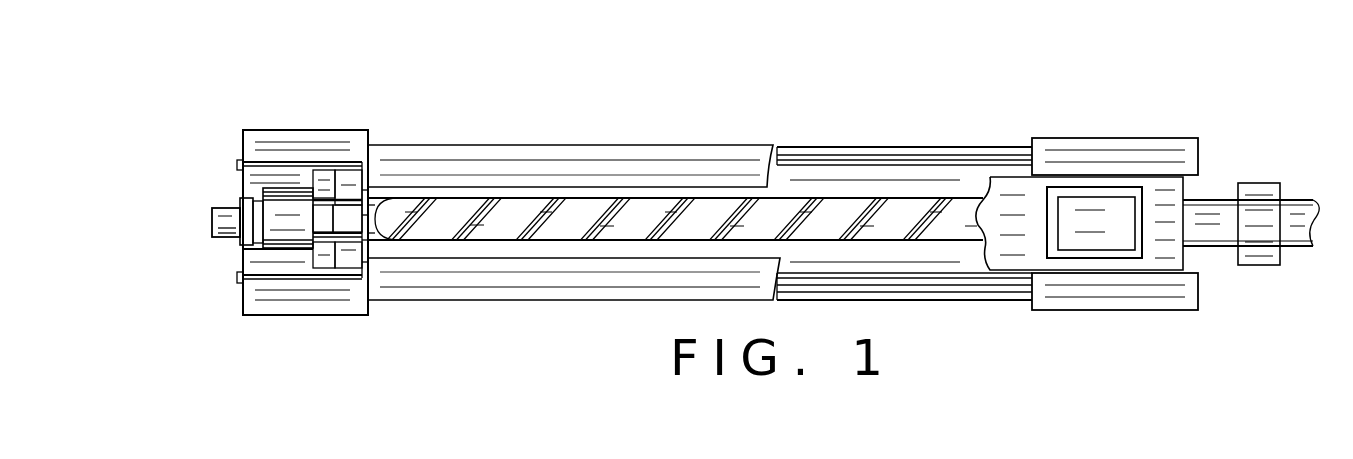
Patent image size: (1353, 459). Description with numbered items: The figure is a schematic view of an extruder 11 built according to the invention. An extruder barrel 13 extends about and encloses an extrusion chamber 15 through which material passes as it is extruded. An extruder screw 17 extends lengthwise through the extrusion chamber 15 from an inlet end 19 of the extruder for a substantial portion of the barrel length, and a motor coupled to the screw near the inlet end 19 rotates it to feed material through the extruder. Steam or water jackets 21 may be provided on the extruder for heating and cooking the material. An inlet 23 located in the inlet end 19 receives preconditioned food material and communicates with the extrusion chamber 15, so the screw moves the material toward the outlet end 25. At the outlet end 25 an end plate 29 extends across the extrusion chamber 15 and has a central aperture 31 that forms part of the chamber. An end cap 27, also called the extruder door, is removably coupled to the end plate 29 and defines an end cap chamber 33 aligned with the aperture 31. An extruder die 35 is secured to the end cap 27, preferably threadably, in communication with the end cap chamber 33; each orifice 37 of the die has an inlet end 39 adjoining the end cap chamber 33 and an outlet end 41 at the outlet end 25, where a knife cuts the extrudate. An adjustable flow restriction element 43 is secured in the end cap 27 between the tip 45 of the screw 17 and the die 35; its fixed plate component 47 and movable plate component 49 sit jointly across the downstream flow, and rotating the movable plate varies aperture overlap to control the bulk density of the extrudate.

The extruder 11 is at (1157, 327).
The extruder barrel 13 is at (884, 163).
The extrusion chamber 15 is at (907, 178).
The extruder screw 17 is at (918, 218).
The inlet end 19 is at (1183, 260).
The steam or water jackets 21 is at (853, 148).
The inlet 23 is at (1110, 217).
The outlet end 25 is at (243, 262).
The end cap 27 is at (295, 300).
The end plate 29 is at (368, 266).
The aperture 31 is at (372, 252).
The end cap chamber 33 is at (284, 220).
The extruder die 35 is at (232, 203).
The orifice 37 is at (212, 208).
The inlet end of orifice 39 is at (226, 231).
The outlet end of orifice 41 is at (226, 229).
The adjustable flow restriction element 43 is at (337, 185).
The tip of screw 45 is at (380, 225).
The fixed plate component 47 is at (343, 260).
The movable plate component 49 is at (327, 260).